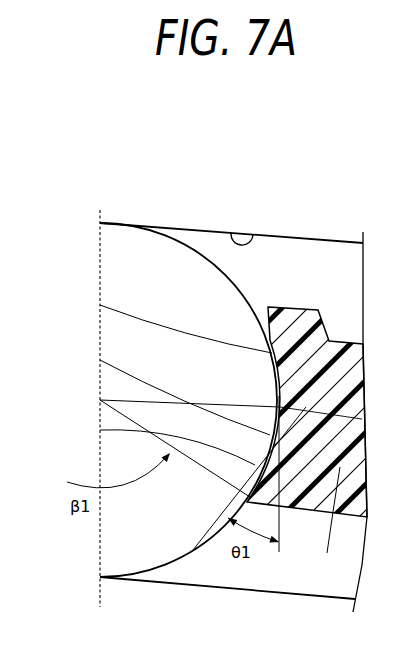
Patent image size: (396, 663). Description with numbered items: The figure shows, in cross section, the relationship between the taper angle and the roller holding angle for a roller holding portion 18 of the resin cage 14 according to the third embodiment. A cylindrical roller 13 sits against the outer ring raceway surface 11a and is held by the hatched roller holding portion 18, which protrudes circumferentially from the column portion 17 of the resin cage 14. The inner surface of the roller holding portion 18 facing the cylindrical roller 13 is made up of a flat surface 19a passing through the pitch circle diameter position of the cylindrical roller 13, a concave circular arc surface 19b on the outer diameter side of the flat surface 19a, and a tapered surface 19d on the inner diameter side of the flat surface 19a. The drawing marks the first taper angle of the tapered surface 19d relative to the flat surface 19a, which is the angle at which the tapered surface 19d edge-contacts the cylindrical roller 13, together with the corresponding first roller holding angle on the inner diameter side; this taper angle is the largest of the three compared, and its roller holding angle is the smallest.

The cylindrical roller 13 is at (188, 236).
The outer ring raceway surface 11a is at (252, 228).
The roller holding portion 18 is at (283, 323).
The resin cage 14 is at (339, 336).
The column portion 17 is at (305, 497).
The flat surface 19a is at (100, 360).
The concave circular arc surface 19b is at (100, 305).
The tapered surface 19d is at (100, 430).